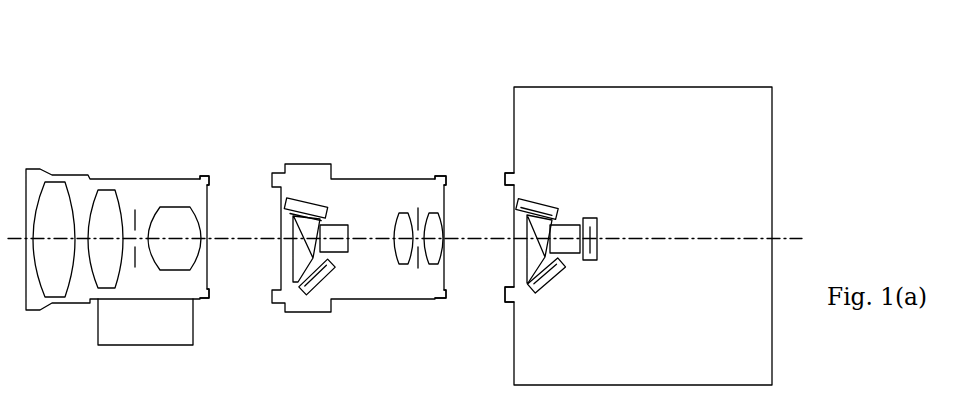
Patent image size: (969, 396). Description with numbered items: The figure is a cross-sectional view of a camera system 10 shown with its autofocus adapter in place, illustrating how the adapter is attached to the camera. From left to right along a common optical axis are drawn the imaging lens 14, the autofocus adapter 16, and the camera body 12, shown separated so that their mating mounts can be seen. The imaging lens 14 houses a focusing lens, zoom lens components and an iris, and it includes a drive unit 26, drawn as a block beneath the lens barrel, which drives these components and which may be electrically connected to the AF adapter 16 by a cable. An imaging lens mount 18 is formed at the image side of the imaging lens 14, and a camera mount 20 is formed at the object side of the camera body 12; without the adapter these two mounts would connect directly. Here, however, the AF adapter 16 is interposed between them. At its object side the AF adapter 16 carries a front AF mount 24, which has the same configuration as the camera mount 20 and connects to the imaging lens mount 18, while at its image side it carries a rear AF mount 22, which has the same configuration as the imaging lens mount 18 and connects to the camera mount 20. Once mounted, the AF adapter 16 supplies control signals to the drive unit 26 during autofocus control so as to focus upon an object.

The camera system 10 is at (488, 52).
The camera body 12 is at (643, 87).
The imaging lens 14 is at (125, 179).
The autofocus adapter 16 is at (370, 179).
The imaging lens mount 18 is at (210, 177).
The camera mount 20 is at (506, 172).
The rear AF mount 22 is at (444, 176).
The front AF mount 24 is at (273, 173).
The drive unit 26 is at (105, 330).